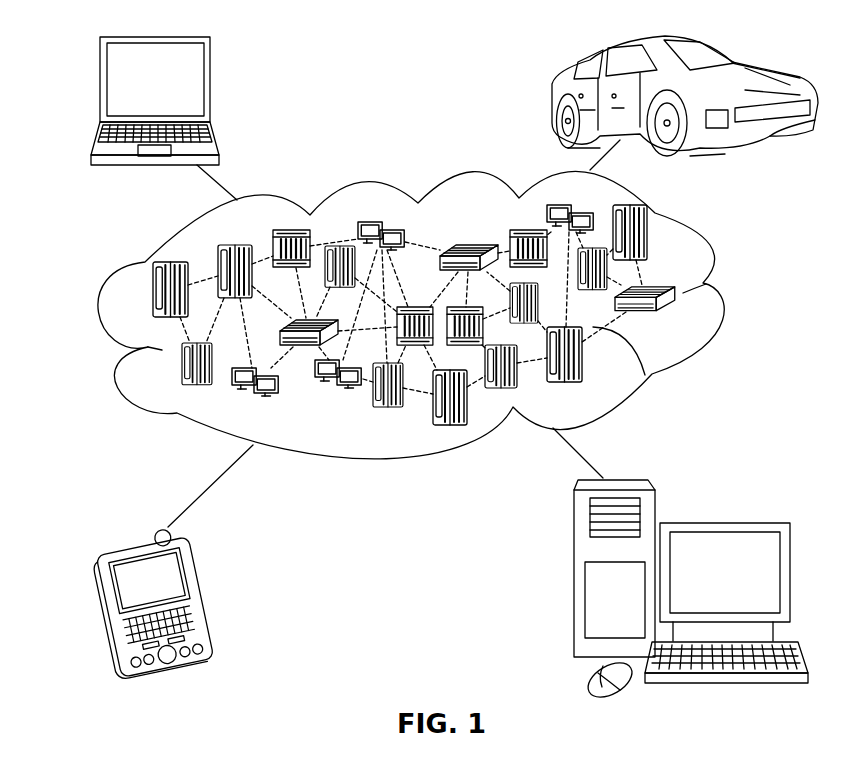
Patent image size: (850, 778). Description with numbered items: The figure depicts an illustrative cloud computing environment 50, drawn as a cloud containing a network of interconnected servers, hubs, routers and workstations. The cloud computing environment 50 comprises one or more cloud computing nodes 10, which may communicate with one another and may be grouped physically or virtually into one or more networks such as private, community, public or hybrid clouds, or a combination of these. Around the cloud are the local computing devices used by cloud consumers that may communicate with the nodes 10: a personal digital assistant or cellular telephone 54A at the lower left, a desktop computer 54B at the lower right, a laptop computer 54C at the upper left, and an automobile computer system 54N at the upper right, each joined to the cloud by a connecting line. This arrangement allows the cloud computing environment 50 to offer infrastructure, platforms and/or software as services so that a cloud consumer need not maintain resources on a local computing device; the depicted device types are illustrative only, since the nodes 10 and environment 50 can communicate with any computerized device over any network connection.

The cloud computing nodes 10 is at (681, 320).
The cloud computing environment 50 is at (720, 297).
The personal digital assistant (PDA) or cellular telephone 54A is at (198, 593).
The desktop computer 54B is at (722, 522).
The laptop computer 54C is at (213, 82).
The automobile computer system 54N is at (556, 101).